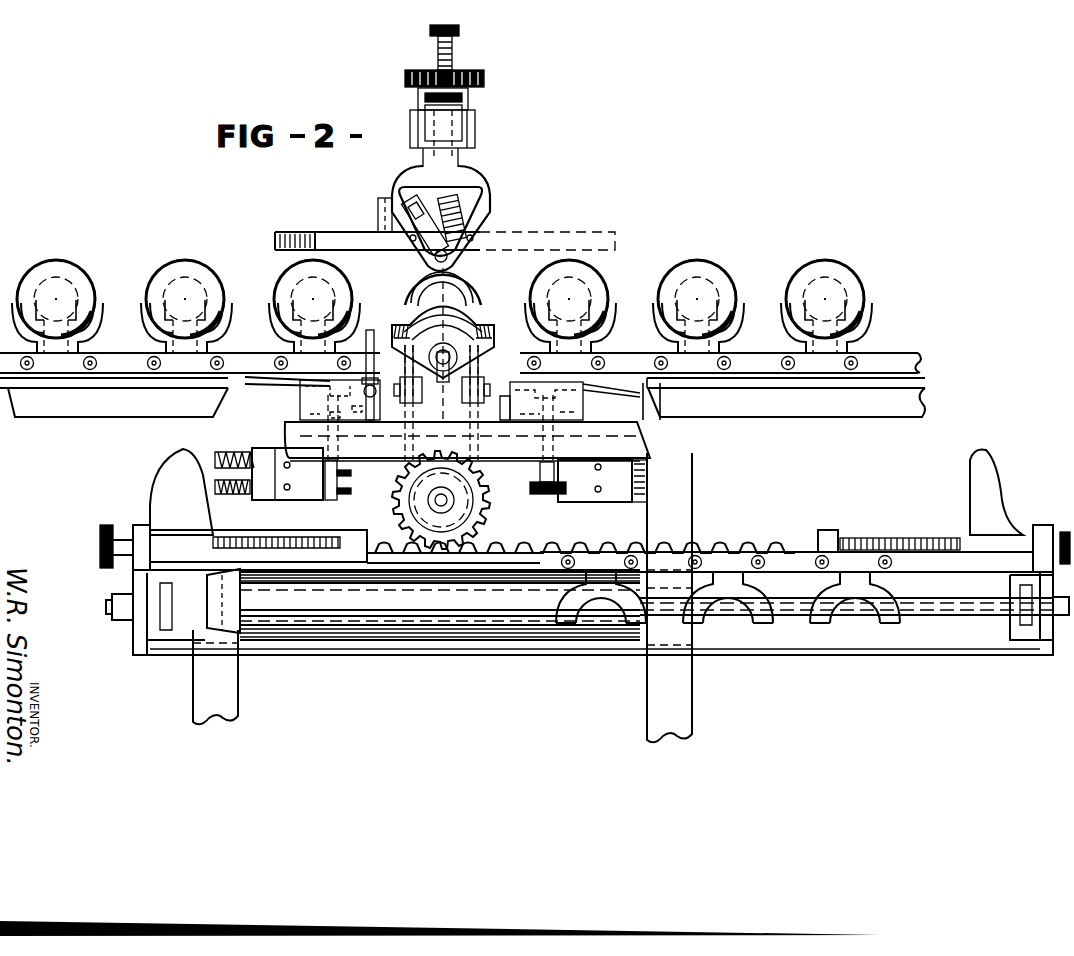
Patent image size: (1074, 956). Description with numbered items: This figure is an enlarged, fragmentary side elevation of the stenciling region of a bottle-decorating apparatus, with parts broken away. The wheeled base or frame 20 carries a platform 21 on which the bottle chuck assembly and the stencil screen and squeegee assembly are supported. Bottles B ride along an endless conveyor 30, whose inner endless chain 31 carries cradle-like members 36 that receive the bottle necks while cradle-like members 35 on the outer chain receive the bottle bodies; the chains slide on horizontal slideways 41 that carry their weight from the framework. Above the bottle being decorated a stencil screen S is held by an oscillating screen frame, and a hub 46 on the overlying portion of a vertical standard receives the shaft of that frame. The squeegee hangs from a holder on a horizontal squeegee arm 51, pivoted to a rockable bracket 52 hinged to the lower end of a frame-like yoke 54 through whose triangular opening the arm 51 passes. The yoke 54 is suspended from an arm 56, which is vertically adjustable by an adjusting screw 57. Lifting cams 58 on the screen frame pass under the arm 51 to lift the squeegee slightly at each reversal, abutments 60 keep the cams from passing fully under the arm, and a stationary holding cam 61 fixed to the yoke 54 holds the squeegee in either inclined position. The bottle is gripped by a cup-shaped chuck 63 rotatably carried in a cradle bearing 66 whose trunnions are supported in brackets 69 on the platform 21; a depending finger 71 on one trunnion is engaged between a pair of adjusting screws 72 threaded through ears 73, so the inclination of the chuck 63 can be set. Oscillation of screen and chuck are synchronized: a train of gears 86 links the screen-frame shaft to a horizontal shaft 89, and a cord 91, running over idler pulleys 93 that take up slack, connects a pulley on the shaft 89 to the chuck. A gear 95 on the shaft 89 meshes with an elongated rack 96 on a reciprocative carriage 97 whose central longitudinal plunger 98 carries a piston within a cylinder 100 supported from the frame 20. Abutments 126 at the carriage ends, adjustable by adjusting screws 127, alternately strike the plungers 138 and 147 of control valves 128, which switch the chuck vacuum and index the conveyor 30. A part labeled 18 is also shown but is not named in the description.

The adjusting screw 57 is at (433, 50).
The train of gears 86 is at (470, 72).
The hub 46 is at (468, 106).
The arm 56 is at (462, 128).
The squeegee arm 51 is at (440, 169).
The yoke 54 is at (482, 186).
The lifting cams 58 is at (462, 214).
The abutments 60 is at (385, 198).
The stationary holding cam 61 is at (500, 232).
The rockable bracket 52 is at (422, 258).
The stencil screen S is at (275, 265).
The bottles B is at (160, 275).
The center line / spindle 18 is at (452, 292).
The cup-shaped chuck 63 is at (468, 300).
The cradle bearing 66 is at (404, 326).
The ears 73 is at (362, 382).
The adjusting screws 72 is at (362, 390).
The brackets 69 is at (392, 402).
The depending finger 71 is at (400, 404).
The idler pulleys 93 is at (490, 398).
The platform 21 is at (612, 428).
The cord 91 is at (472, 440).
The cradle-like members 35 is at (88, 334).
The cradle-like members 36 is at (216, 332).
The endless conveyor 30 is at (116, 384).
The horizontal slideways 41 is at (36, 418).
The inner endless chain 31 is at (908, 360).
The plunger 147 is at (232, 456).
The abutment 126 is at (186, 506).
The adjusting screws 127 is at (104, 530).
The plunger 138 is at (236, 496).
The control valves 128 is at (290, 502).
The horizontal shaft 89 is at (455, 498).
The gear 95 is at (492, 509).
The elongated rack 96 is at (516, 548).
The central longitudinal plunger 98 is at (946, 603).
The reciprocative carriage 97 is at (960, 654).
The cylinder 100 is at (490, 630).
The frame 20 is at (238, 709).